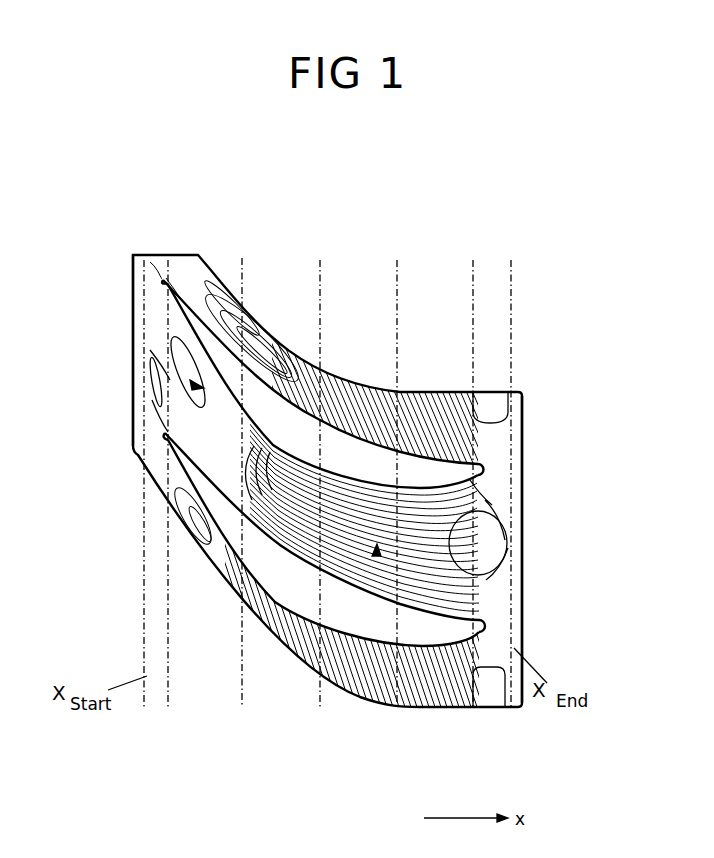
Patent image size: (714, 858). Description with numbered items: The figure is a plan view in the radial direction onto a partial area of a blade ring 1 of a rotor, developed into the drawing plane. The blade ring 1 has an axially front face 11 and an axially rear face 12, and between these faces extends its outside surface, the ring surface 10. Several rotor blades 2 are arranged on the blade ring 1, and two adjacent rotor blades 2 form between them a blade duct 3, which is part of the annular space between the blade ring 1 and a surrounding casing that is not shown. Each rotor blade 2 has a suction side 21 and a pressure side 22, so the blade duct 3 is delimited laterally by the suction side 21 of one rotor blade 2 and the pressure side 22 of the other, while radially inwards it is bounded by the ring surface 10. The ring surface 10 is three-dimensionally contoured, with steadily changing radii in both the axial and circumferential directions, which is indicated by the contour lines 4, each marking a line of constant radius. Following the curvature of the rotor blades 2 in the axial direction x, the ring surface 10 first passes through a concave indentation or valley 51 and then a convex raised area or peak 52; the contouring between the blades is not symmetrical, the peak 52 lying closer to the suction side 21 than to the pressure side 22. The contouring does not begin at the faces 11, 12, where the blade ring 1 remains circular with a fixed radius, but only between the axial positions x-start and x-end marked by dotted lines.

The blade ring 1 is at (523, 421).
The rotor blade 2 is at (337, 463).
The blade duct 3 is at (436, 591).
The contour lines 4 is at (215, 430).
The ring surface 10 is at (192, 394).
The axially front face 11 is at (131, 305).
The axially rear face 12 is at (525, 453).
The suction side 21 is at (362, 494).
The pressure side 22 is at (346, 423).
The valley 51 is at (196, 386).
The peak 52 is at (376, 552).